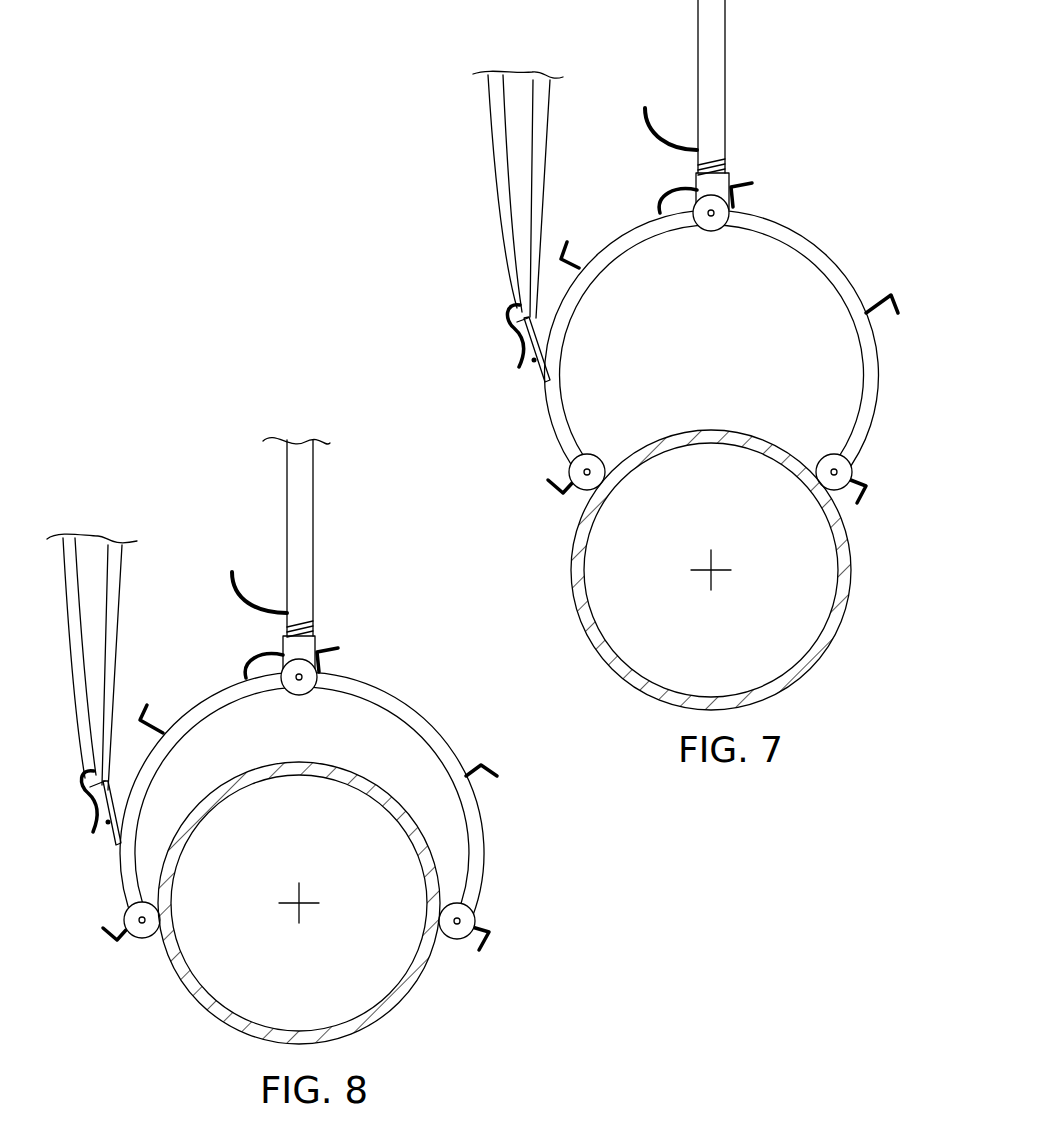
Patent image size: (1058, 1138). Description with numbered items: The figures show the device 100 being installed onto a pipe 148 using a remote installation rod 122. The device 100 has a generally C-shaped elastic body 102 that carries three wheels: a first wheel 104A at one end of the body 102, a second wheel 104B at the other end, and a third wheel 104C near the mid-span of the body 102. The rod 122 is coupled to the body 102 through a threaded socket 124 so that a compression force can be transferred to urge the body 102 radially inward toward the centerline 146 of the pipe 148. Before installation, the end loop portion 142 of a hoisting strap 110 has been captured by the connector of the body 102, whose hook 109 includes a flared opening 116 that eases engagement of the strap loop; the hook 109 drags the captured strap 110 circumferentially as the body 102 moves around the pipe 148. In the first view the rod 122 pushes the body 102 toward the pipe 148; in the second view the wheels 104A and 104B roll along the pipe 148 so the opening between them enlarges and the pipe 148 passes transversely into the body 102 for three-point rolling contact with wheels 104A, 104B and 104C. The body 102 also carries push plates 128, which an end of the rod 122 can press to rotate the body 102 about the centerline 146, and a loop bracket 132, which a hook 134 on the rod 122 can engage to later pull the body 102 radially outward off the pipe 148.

In FIG. 7, the device 100 is at (828, 215).
In FIG. 8, the device 100 is at (414, 680).
In FIG. 7, the C-shaped body 102 is at (877, 374).
In FIG. 7, the first wheel 104A is at (830, 456).
In FIG. 8, the first wheel 104A is at (440, 920).
In FIG. 7, the second wheel 104B is at (590, 456).
In FIG. 8, the second wheel 104B is at (160, 918).
In FIG. 7, the third wheel 104C is at (710, 228).
In FIG. 8, the third wheel 104C is at (297, 692).
In FIG. 7, the hook 109 is at (515, 352).
In FIG. 8, the hook 109 is at (93, 815).
In FIG. 7, the hoisting strap 110 is at (500, 140).
In FIG. 8, the hoisting strap 110 is at (92, 662).
In FIG. 7, the flared opening 116 is at (534, 362).
In FIG. 8, the flared opening 116 is at (108, 825).
In FIG. 7, the rod 122 is at (714, 47).
In FIG. 8, the rod 122 is at (302, 510).
In FIG. 7, the threaded socket 124 is at (722, 183).
In FIG. 8, the threaded socket 124 is at (308, 645).
In FIG. 7, the push plates 128 is at (893, 292).
In FIG. 8, the push plates 128 is at (483, 762).
In FIG. 7, the loop bracket 132 is at (670, 197).
In FIG. 8, the loop bracket 132 is at (256, 655).
In FIG. 7, the hook 134 is at (678, 148).
In FIG. 8, the hook 134 is at (262, 612).
In FIG. 7, the end loop portion 142 is at (472, 258).
In FIG. 7, the centerline 146 is at (713, 565).
In FIG. 8, the centerline 146 is at (300, 898).
In FIG. 7, the pipe 148 is at (822, 662).
In FIG. 8, the pipe 148 is at (410, 992).